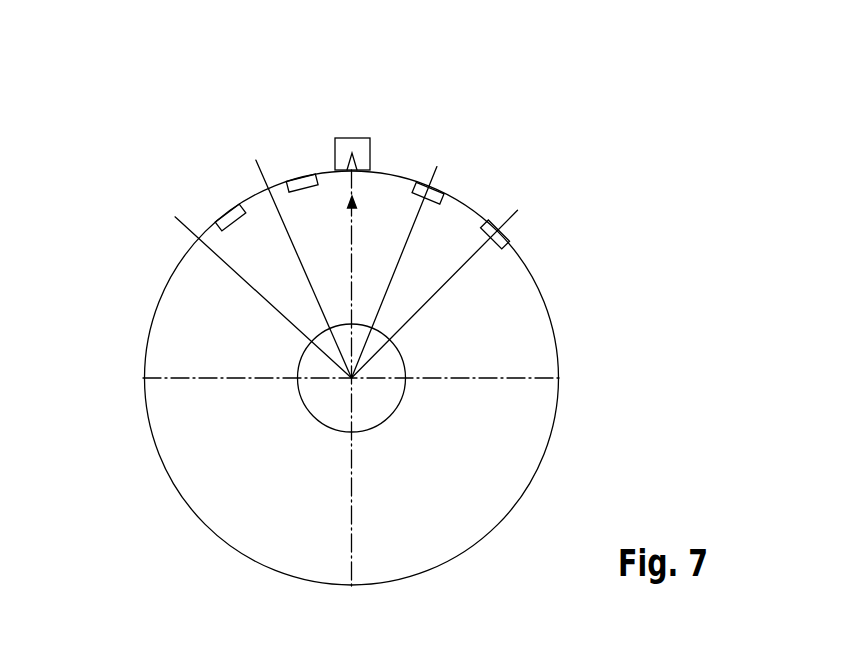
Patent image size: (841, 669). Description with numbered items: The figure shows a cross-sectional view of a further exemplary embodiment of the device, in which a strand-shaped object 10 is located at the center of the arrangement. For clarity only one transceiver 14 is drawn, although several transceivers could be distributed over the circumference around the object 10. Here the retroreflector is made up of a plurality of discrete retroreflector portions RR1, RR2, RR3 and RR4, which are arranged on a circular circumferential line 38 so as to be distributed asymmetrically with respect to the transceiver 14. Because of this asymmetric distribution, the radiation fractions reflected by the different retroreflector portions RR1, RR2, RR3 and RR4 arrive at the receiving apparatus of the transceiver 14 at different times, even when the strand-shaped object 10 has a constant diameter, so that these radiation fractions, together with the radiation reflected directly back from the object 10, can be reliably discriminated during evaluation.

The strand-shaped object 10 is at (403, 356).
The transceiver 14 is at (372, 152).
The circular circumferential line 38 is at (165, 287).
The retroreflector portion RR1 is at (304, 254).
The retroreflector portion RR2 is at (414, 258).
The retroreflector portion RR3 is at (263, 276).
The retroreflector portion RR4 is at (456, 282).